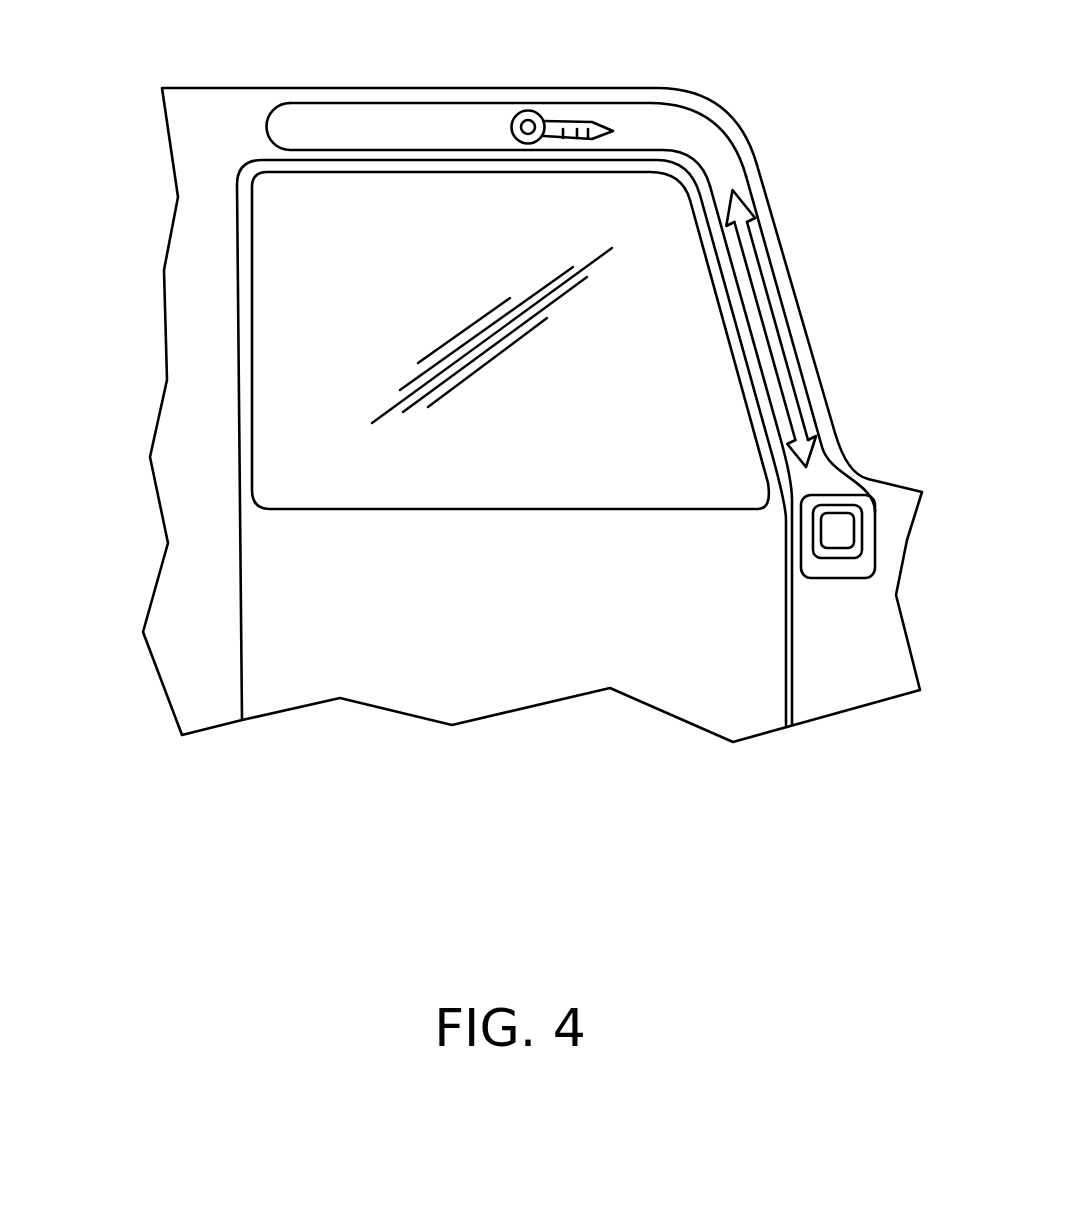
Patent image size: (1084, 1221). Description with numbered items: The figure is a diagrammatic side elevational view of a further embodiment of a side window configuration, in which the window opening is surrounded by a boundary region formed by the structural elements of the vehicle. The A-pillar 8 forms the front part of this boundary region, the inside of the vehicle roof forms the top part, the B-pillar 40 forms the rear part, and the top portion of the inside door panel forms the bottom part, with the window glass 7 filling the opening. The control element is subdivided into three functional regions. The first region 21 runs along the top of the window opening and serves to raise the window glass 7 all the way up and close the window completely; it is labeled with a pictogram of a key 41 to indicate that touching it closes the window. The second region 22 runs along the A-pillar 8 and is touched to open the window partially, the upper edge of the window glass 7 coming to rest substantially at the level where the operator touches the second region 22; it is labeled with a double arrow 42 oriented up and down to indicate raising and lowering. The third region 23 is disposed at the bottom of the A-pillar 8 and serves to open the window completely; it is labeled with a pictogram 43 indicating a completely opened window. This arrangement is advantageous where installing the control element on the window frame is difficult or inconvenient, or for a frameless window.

The B-pillar 40 is at (193, 388).
The A-pillar 8 is at (777, 225).
The first region 21 is at (392, 127).
The second region 22 is at (768, 272).
The window glass 7 is at (598, 480).
The double arrow 42 is at (777, 342).
The key 41 is at (558, 122).
The third region 23 is at (857, 565).
The pictogram 43 is at (838, 528).